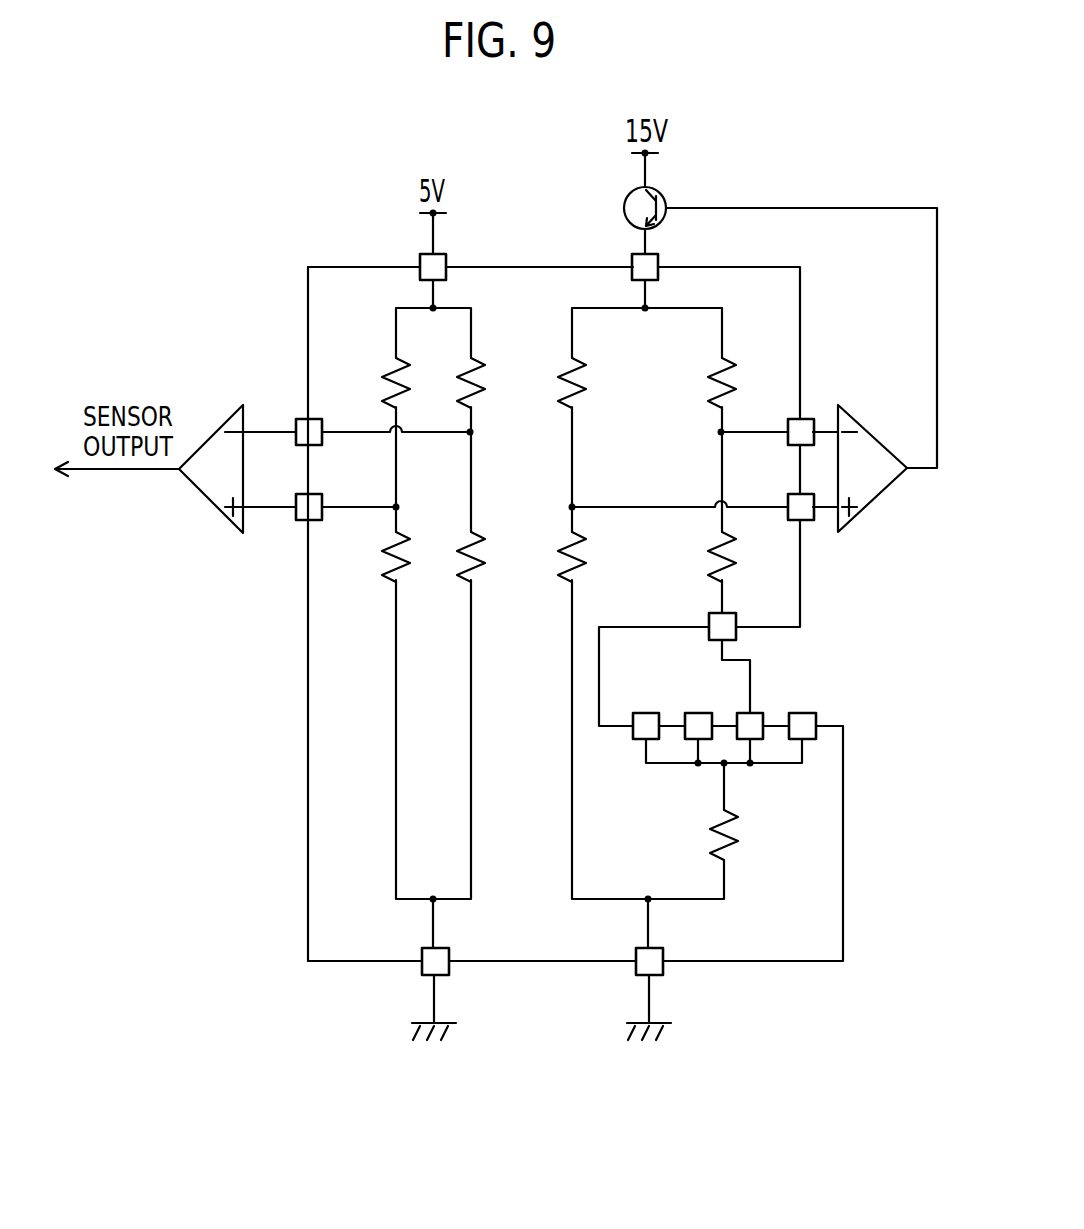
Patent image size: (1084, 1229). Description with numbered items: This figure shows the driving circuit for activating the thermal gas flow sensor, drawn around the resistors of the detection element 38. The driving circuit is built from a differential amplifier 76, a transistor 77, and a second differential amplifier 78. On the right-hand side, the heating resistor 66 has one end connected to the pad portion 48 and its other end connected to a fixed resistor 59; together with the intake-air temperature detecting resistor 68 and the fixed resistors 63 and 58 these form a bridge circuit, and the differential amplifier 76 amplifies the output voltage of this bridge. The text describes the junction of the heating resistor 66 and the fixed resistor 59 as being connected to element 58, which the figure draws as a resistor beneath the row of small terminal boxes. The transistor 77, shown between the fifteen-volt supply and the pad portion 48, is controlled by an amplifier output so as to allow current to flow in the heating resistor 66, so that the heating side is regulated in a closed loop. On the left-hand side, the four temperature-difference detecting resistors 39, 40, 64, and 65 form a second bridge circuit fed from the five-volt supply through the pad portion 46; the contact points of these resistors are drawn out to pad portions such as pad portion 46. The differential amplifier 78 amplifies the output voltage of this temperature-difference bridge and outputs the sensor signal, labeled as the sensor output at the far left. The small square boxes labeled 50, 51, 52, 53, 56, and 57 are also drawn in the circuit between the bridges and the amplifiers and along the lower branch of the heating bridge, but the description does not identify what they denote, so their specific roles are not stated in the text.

The detection element 38 is at (330, 267).
The temperature-difference detecting resistor 39 is at (386, 368).
The temperature-difference detecting resistor 40 is at (463, 572).
The pad portion 46 is at (420, 260).
The pad portion 48 is at (632, 259).
The terminal 50 is at (650, 713).
The terminal 51 is at (694, 713).
The terminal 52 is at (734, 713).
The terminal 53 is at (804, 713).
The terminal 56 is at (732, 613).
The terminal 57 is at (300, 418).
The fixed resistor 58 is at (718, 818).
The fixed resistor 59 is at (300, 524).
The fixed resistor 63 is at (712, 572).
The temperature-difference detecting resistor 64 is at (388, 572).
The temperature-difference detecting resistor 65 is at (461, 368).
The heating resistor 66 is at (562, 368).
The intake-air temperature detecting resistor 68 is at (712, 368).
The differential amplifier 76 is at (882, 500).
The transistor 77 is at (624, 210).
The differential amplifier 78 is at (219, 418).